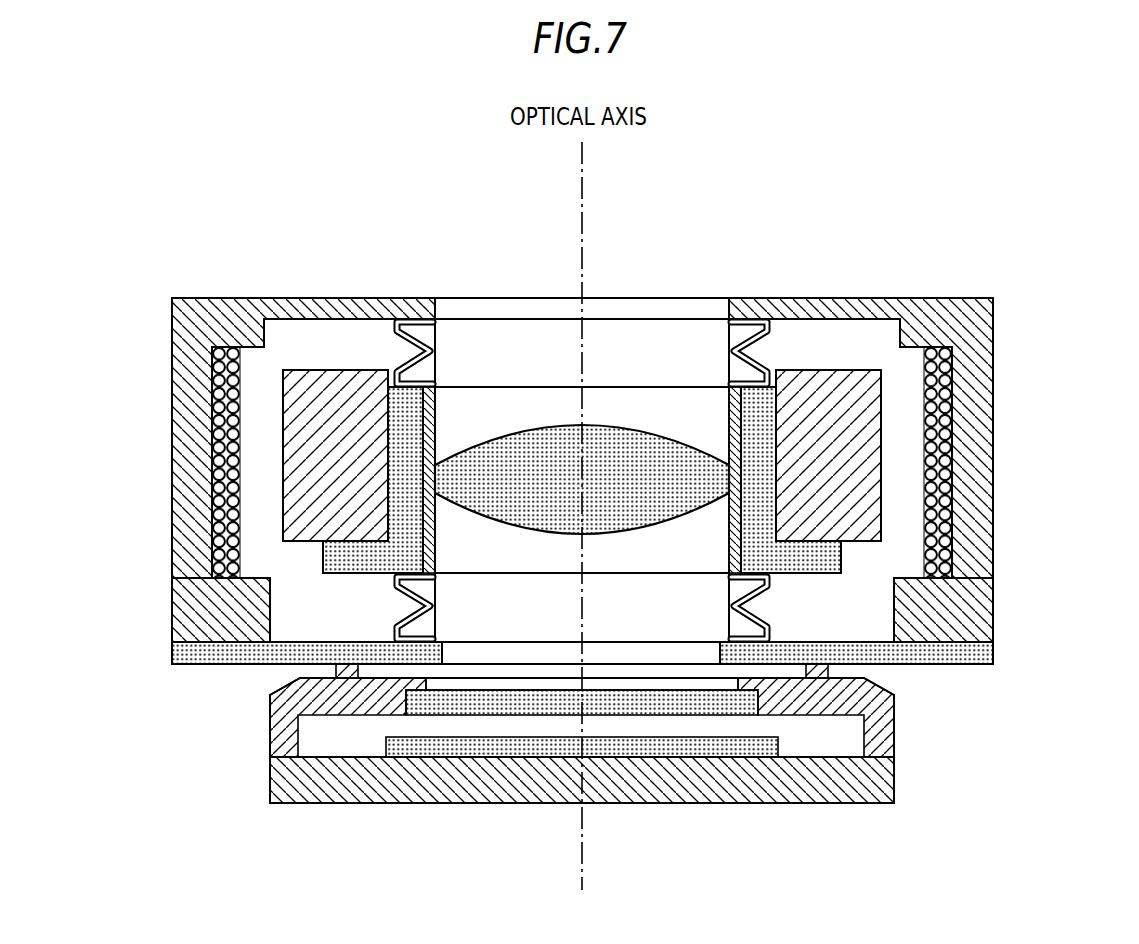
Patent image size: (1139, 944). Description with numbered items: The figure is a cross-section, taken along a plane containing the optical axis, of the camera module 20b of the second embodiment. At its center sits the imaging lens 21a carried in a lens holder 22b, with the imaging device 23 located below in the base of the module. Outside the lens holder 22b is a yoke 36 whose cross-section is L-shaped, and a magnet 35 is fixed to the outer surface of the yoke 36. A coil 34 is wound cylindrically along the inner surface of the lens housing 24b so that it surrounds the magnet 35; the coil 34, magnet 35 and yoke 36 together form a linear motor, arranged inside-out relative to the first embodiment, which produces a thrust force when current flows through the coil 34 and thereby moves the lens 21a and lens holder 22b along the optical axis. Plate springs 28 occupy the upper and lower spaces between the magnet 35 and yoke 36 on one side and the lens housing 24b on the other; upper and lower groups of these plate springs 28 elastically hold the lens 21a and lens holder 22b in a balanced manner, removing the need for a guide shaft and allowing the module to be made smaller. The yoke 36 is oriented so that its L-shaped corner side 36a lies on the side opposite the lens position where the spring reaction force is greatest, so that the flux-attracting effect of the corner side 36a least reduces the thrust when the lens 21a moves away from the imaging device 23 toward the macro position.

The camera module 20b is at (862, 141).
The imaging lens 21a is at (530, 460).
The lens holder 22b is at (668, 410).
The imaging device 23 is at (421, 745).
The lens housing 24b is at (993, 362).
The plate springs 28 is at (758, 360).
The coil 34 is at (240, 476).
The magnet 35 is at (342, 412).
The yoke 36 is at (415, 462).
The L-shaped corner side 36a is at (353, 558).